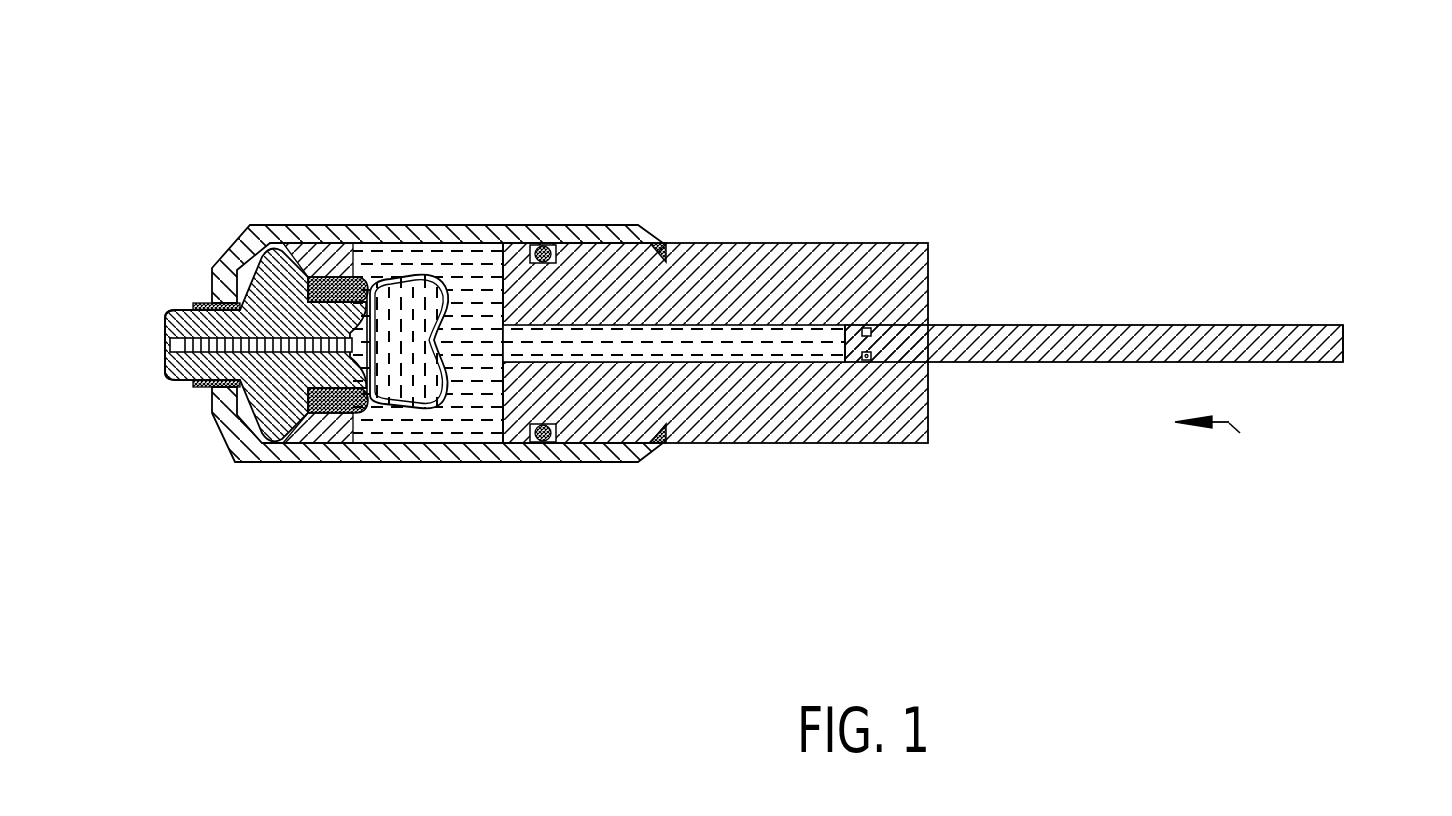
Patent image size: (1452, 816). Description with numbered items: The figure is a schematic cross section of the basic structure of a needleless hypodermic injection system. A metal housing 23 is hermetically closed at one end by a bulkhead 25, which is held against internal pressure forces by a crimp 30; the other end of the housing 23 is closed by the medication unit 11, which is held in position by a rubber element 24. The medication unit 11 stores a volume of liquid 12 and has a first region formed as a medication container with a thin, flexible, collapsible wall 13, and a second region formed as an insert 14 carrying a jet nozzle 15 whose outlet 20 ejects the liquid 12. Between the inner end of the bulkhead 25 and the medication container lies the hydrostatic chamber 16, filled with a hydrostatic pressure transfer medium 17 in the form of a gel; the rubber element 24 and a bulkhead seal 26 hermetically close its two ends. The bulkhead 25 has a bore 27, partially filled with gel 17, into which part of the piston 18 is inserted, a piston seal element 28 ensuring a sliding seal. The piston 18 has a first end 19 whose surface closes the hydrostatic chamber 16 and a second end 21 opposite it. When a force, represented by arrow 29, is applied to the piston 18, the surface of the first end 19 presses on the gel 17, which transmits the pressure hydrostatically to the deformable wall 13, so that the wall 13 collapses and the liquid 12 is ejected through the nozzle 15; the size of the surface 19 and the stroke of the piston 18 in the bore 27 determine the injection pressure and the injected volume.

The medication unit 11 is at (306, 471).
The liquid 12 is at (408, 373).
The flexible wall 13 is at (447, 253).
The insert 14 is at (272, 372).
The jet nozzle 15 is at (313, 392).
The hydrostatic chamber 16 is at (485, 283).
The hydrostatic pressure transfer medium 17 is at (475, 408).
The piston 18 is at (1063, 348).
The first end 19 is at (843, 338).
The outlet 20 is at (165, 335).
The second end 21 is at (1348, 342).
The metal housing 23 is at (394, 236).
The rubber element 24 is at (320, 283).
The bulkhead 25 is at (787, 403).
The bulkhead seal 26 is at (533, 440).
The bore 27 is at (695, 352).
The piston seal element 28 is at (868, 358).
The arrow 29 is at (1229, 422).
The crimp 30 is at (657, 248).